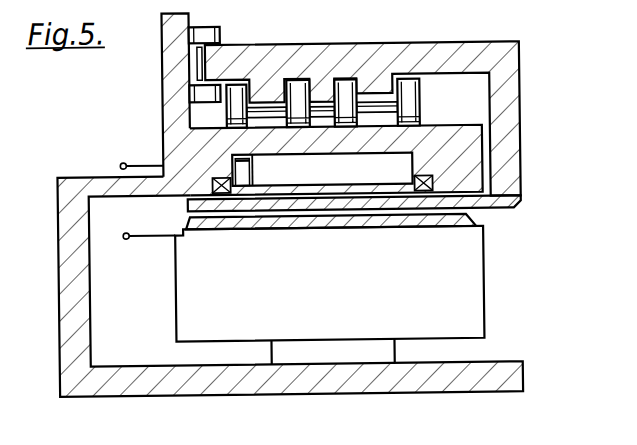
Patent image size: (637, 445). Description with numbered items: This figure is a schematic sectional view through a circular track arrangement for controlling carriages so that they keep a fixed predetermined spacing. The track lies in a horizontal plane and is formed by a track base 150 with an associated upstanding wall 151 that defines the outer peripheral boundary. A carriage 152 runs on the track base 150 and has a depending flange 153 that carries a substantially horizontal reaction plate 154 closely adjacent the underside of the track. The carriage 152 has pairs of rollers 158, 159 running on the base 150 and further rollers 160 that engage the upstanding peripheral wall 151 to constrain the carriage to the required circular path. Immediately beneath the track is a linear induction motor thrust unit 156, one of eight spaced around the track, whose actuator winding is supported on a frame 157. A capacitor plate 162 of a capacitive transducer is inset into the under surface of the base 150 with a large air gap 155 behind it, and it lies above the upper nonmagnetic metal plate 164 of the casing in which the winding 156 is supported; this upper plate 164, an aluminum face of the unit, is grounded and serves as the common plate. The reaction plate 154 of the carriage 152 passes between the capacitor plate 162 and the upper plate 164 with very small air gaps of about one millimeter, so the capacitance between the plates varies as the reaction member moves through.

The track base 150 is at (378, 144).
The upstanding wall 151 is at (172, 58).
The carriage 152 is at (381, 99).
The depending flange 153 is at (515, 99).
The reaction plate 154 is at (192, 206).
The air gap 155 is at (405, 164).
The linear induction motor thrust unit 156 is at (185, 261).
The frame 157 is at (106, 386).
The roller 158 is at (409, 83).
The roller 159 is at (240, 84).
The roller 160 is at (210, 25).
The capacitor plate 162 is at (322, 185).
The upper nonmagnetic metal plate 164 is at (465, 224).